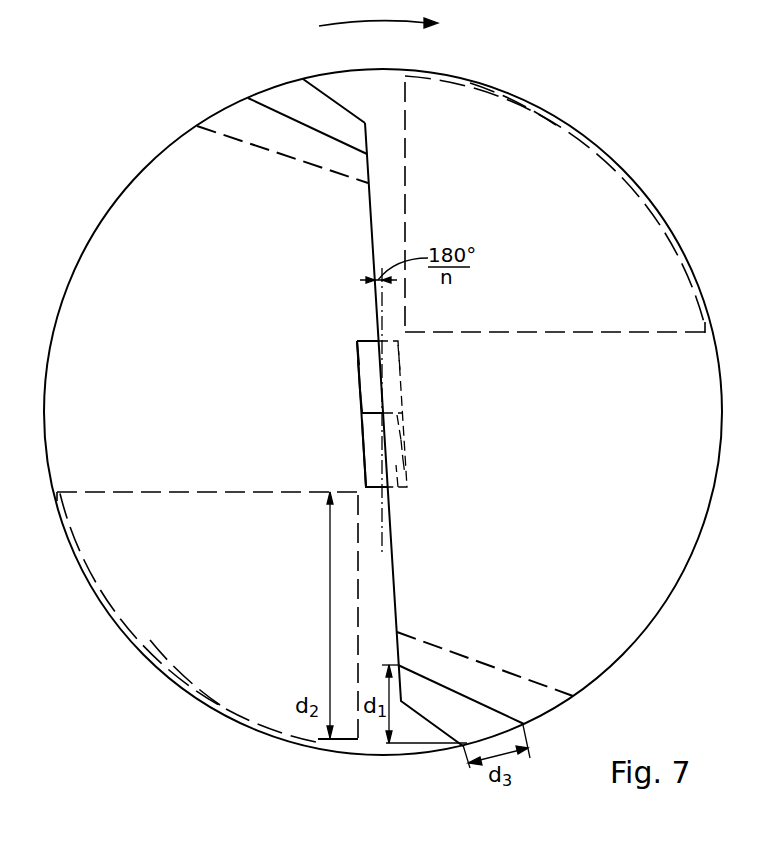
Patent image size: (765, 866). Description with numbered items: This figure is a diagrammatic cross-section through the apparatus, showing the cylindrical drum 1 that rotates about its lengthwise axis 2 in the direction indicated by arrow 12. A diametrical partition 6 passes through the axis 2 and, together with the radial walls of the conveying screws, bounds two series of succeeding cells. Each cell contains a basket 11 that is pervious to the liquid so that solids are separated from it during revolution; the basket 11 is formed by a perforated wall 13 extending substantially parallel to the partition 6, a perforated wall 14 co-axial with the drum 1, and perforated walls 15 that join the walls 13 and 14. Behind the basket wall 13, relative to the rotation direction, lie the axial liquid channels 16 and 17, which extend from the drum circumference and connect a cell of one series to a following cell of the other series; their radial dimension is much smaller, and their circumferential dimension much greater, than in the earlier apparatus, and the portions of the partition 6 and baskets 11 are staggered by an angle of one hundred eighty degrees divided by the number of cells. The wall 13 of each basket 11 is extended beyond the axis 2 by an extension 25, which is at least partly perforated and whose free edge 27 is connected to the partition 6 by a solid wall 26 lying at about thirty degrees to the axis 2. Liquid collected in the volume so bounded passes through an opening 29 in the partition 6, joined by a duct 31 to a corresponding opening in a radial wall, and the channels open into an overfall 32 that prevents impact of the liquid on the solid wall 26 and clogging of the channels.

The cylindrical drum 1 is at (163, 150).
The lengthwise axis 2 is at (386, 411).
The partition 6 is at (396, 609).
The basket 11 is at (509, 100).
The arrow 12 is at (363, 27).
The perforated wall 13 is at (405, 146).
The perforated wall 14 is at (578, 142).
The perforated walls 15 is at (561, 290).
The axial channel 16 is at (288, 98).
The axial channel 17 is at (458, 707).
The extension 25 is at (360, 408).
The solid wall 26 is at (357, 341).
The free edge 27 is at (357, 343).
The opening 29 is at (367, 395).
The duct 31 is at (368, 372).
The overfall 32 is at (370, 453).